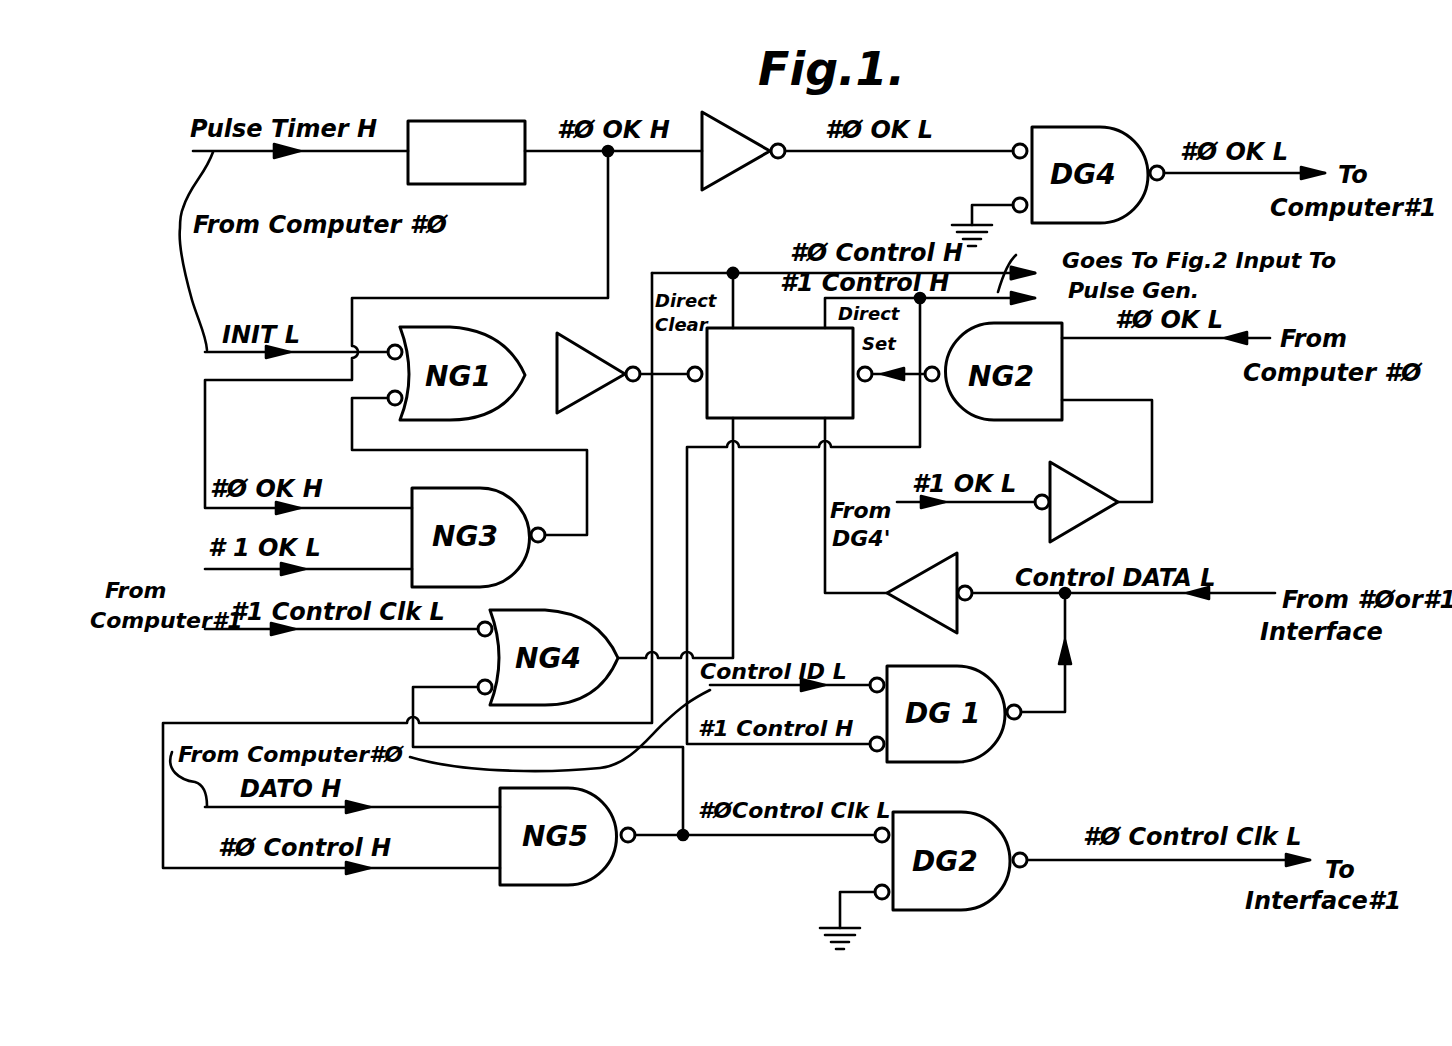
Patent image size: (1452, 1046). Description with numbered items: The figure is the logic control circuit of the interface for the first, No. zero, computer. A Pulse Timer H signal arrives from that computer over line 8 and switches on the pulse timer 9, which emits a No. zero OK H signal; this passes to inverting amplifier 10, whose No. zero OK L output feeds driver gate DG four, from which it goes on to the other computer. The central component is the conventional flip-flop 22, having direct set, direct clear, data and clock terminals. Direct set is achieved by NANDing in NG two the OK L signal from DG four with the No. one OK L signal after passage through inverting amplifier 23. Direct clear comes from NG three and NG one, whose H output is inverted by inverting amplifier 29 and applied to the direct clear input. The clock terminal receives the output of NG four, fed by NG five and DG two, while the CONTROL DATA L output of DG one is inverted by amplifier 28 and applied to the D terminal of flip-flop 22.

The line 8 is at (253, 153).
The pulse timer 9 is at (470, 134).
The inverting amplifier 10 is at (735, 152).
The flip-flop 22 is at (797, 310).
The inverting amplifier 23 is at (1070, 498).
The inverting amplifier 28 is at (925, 597).
The inverting amplifier 29 is at (583, 378).